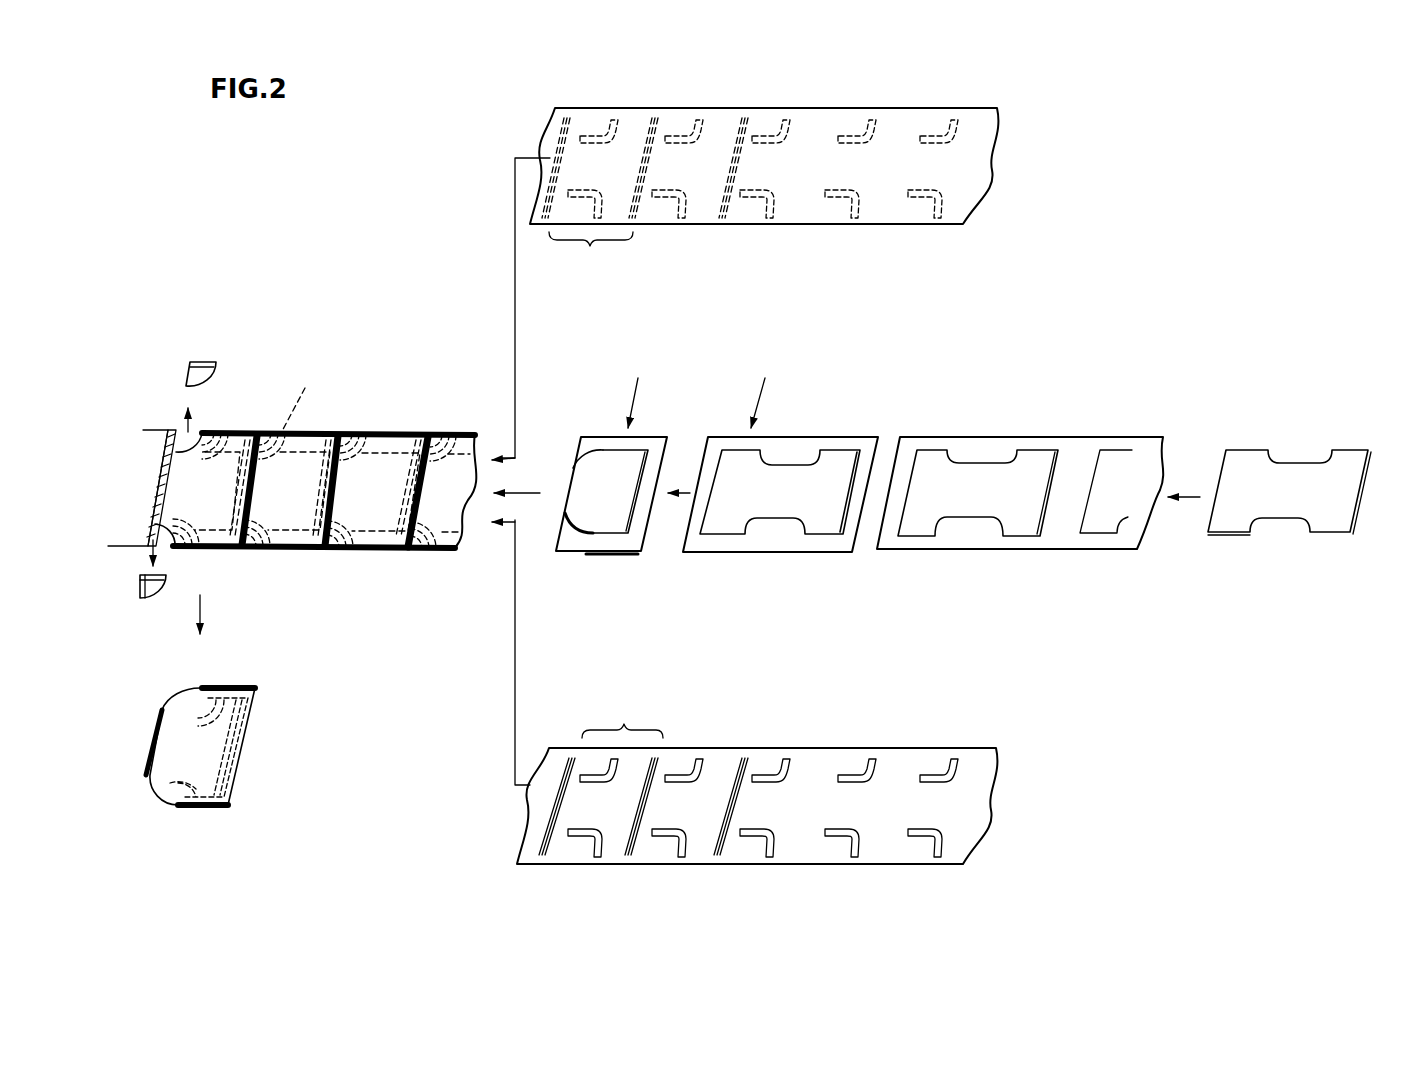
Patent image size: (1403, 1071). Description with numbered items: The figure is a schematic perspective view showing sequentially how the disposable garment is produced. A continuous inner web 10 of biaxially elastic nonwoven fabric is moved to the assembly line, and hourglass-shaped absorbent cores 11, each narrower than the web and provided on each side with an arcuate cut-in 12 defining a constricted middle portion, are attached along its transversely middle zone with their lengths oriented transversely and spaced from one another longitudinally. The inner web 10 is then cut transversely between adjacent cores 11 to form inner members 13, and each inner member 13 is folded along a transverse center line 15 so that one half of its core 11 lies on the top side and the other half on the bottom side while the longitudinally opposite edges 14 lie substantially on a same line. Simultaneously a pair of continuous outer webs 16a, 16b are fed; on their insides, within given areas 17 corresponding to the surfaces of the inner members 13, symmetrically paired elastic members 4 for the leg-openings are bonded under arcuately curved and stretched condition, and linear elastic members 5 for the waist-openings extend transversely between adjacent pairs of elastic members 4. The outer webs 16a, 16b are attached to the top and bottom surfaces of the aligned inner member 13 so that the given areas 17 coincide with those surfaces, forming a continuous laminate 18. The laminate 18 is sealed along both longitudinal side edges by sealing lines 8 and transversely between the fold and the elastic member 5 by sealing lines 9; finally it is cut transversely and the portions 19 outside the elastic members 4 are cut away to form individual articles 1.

The individual article 1 is at (260, 760).
The elastic member for leg-opening 4 is at (598, 118).
The elastic member for waist-opening 5 is at (560, 145).
The sealing line 8 is at (387, 432).
The sealing line 9 is at (160, 478).
The continuous inner web 10 is at (1060, 540).
The absorbent core 11 is at (612, 517).
The arcuate cut-in 12 is at (793, 458).
The inner member 13 is at (702, 388).
The longitudinally opposite edge 14 is at (640, 557).
The transverse center line 15 is at (565, 488).
The continuous outer web 16a is at (968, 183).
The continuous outer web 16b is at (968, 820).
The given area 17 is at (606, 485).
The continuous laminate 18 is at (418, 566).
The portion extending outside the elastic members 19 is at (200, 362).